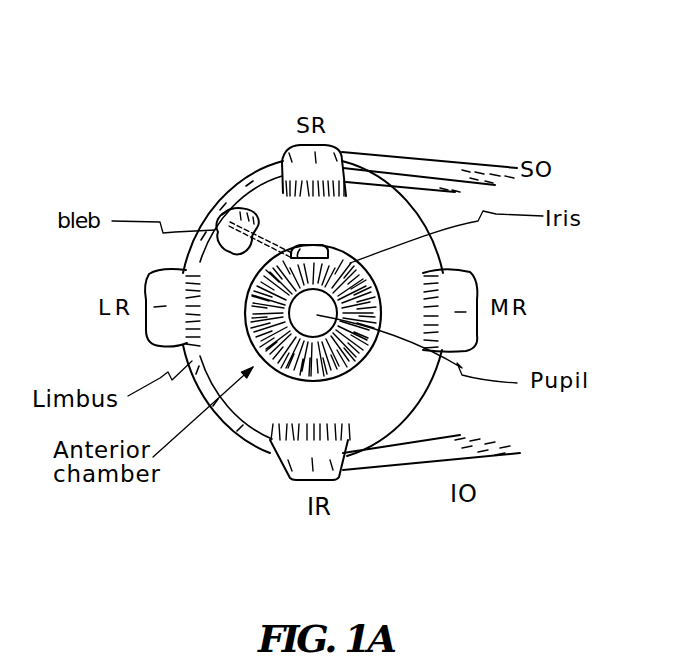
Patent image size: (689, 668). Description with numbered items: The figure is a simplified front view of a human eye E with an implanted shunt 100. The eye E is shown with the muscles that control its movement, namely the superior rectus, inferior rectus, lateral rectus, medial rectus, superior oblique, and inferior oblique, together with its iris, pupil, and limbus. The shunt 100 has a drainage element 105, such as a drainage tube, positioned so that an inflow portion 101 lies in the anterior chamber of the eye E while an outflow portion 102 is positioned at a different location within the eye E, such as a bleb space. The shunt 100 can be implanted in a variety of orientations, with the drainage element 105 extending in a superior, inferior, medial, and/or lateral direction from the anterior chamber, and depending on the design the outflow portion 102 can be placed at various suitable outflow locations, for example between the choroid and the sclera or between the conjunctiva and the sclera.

The eye E is at (233, 80).
The shunt 100 is at (338, 243).
The inflow portion 101 is at (320, 247).
The outflow portion 102 is at (227, 210).
The drainage element 105 is at (277, 247).